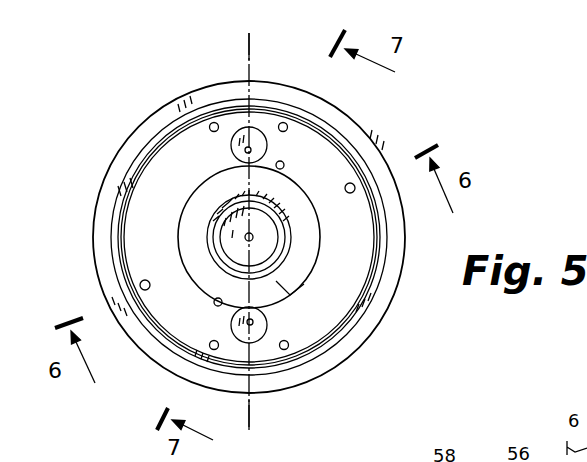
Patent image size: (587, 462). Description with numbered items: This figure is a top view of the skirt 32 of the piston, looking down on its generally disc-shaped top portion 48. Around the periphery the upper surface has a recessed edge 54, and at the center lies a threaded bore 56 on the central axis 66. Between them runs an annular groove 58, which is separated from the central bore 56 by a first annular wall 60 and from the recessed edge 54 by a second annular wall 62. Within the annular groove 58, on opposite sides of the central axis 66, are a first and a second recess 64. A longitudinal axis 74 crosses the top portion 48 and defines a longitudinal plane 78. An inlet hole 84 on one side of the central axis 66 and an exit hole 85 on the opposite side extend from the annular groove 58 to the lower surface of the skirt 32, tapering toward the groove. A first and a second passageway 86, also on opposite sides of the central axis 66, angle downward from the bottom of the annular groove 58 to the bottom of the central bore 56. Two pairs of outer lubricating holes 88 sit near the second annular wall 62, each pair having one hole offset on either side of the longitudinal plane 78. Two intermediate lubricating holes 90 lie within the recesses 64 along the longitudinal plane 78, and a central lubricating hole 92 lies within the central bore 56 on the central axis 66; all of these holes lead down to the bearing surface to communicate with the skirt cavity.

The skirt 32 is at (104, 123).
The top portion 48 is at (357, 123).
The recessed edge 54 is at (284, 84).
The threaded bore 56 is at (267, 246).
The annular groove 58 is at (148, 197).
The first annular wall 60 is at (290, 295).
The second annular wall 62 is at (332, 332).
The recess 64 is at (231, 141).
The central axis 66 is at (249, 231).
The longitudinal axis 74 is at (248, 36).
The longitudinal plane 78 is at (252, 418).
The inlet hole 84 is at (140, 284).
The exit hole 85 is at (350, 193).
The passageway 86 is at (284, 165).
The outer lubricating hole 88 is at (214, 122).
The intermediate lubricating hole 90 is at (244, 152).
The central lubricating hole 92 is at (249, 231).